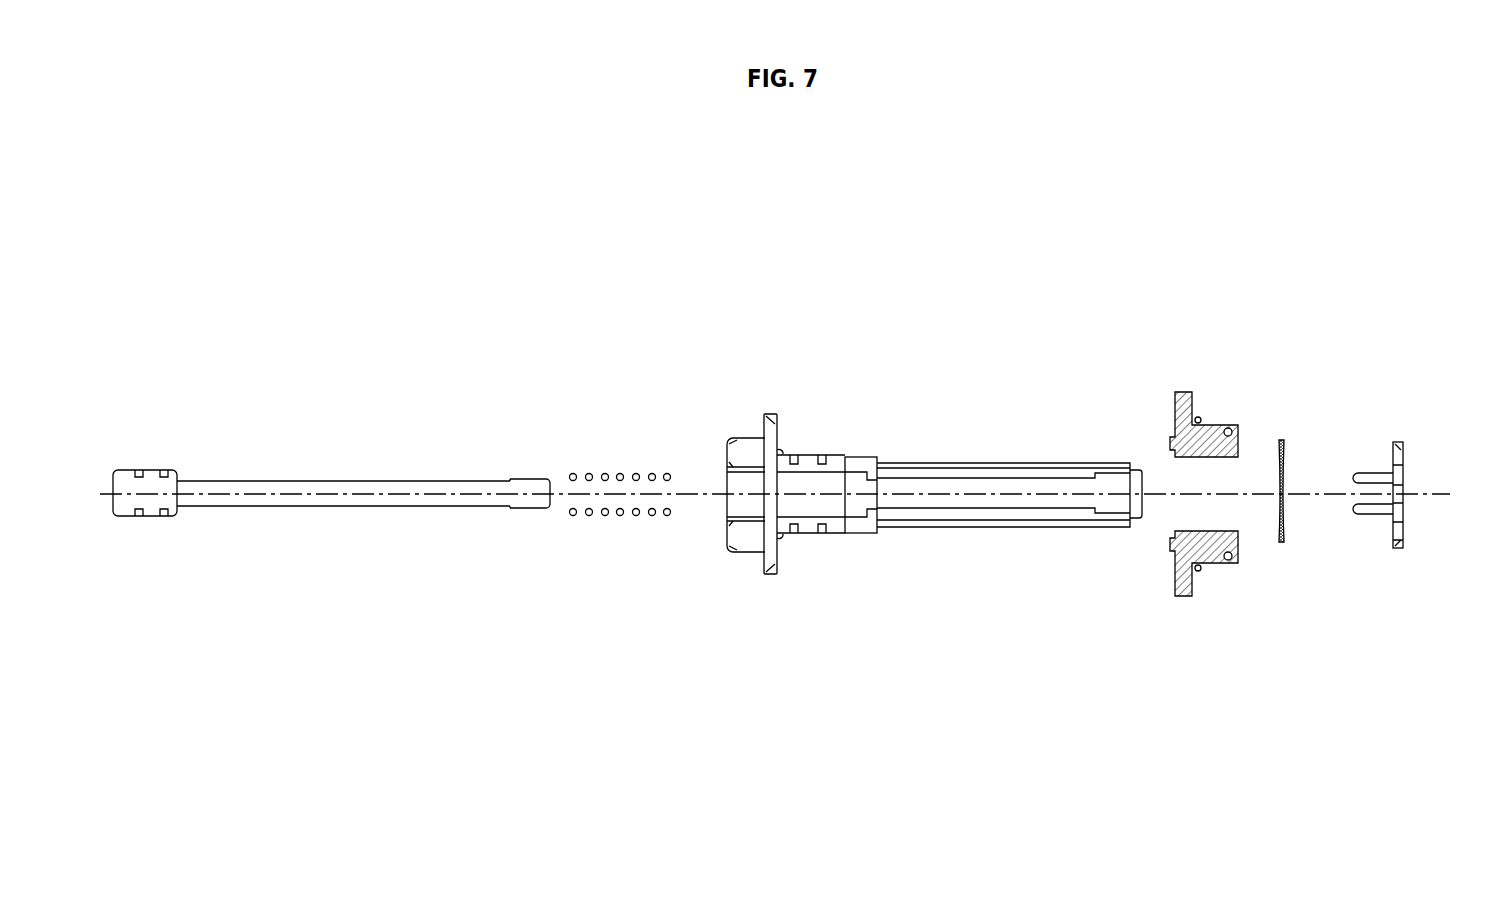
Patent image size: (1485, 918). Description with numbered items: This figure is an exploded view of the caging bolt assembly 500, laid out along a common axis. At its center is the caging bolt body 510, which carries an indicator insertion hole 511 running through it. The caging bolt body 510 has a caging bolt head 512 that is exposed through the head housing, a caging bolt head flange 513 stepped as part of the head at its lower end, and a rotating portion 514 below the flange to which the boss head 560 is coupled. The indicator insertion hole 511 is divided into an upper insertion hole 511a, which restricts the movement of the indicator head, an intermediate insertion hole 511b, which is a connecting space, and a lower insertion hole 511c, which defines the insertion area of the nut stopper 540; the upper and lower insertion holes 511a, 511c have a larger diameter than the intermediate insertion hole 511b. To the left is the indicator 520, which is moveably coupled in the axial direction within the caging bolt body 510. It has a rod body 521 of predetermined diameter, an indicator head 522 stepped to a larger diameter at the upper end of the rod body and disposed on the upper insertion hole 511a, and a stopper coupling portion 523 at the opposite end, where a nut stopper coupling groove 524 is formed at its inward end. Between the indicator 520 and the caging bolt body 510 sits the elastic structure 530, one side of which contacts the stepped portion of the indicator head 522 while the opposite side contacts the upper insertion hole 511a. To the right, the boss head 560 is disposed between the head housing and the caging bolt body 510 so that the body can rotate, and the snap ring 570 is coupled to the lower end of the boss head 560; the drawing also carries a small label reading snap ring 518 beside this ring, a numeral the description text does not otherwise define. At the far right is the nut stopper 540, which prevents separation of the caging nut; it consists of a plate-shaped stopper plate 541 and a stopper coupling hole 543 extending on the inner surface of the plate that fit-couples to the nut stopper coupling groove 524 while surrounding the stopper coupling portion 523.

The caging bolt assembly 500 is at (572, 302).
The caging bolt body 510 is at (905, 462).
The indicator insertion hole 511 is at (1003, 478).
The upper insertion hole 511a is at (858, 533).
The intermediate insertion hole 511b is at (1027, 528).
The lower insertion hole 511c is at (1117, 528).
The caging bolt head 512 is at (735, 438).
The caging bolt head flange 513 is at (771, 414).
The rotating portion 514 is at (808, 455).
The snap ring 518 is at (1285, 542).
The indicator 520 is at (223, 480).
The rod body 521 is at (372, 480).
The indicator head 522 is at (130, 470).
The stopper coupling portion 523 is at (545, 506).
The nut stopper coupling groove 524 is at (508, 505).
The elastic structure 530 is at (630, 475).
The nut stopper 540 is at (1400, 442).
The stopper plate 541 is at (1403, 548).
The stopper coupling hole 543 is at (1362, 514).
The boss head 560 is at (1188, 392).
The snap ring 570 is at (1285, 440).